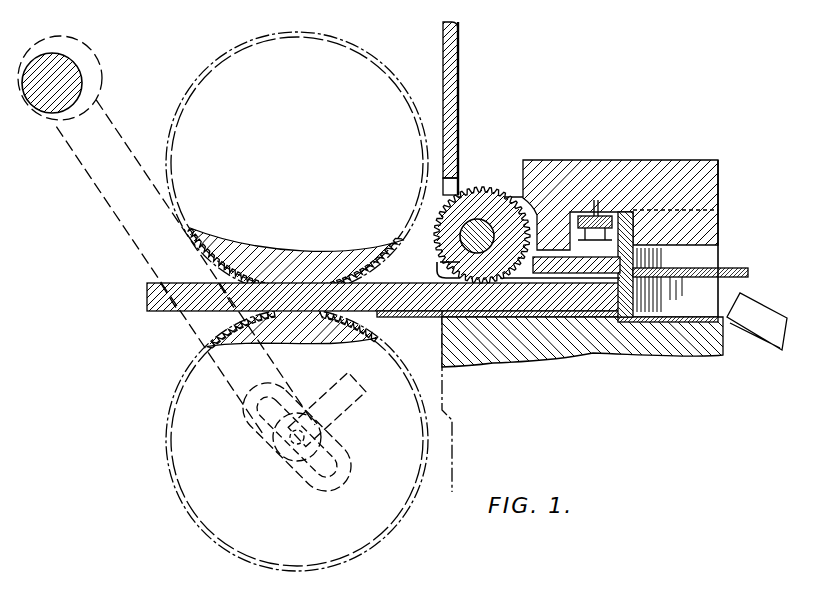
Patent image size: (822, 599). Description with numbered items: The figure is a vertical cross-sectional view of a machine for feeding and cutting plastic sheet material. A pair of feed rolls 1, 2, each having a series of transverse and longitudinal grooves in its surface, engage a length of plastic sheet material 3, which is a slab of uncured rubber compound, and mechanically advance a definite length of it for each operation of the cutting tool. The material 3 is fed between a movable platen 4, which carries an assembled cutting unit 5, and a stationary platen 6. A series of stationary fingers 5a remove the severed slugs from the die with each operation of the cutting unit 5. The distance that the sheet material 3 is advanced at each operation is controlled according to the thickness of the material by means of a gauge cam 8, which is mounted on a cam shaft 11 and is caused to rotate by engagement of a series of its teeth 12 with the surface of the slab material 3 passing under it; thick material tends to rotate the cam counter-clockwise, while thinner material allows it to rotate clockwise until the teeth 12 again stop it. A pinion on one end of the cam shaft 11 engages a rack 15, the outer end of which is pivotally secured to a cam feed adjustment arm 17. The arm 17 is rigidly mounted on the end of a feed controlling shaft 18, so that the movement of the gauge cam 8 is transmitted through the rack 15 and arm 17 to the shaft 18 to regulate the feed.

The feed roll 1 is at (373, 77).
The feed roll 2 is at (195, 357).
The plastic sheet material 3 is at (178, 283).
The movable platen 4 is at (713, 197).
The cutting unit 5 is at (718, 293).
The stationary fingers 5a is at (707, 267).
The stationary platen 6 is at (715, 350).
The gauge cam 8 is at (498, 192).
The cam shaft 11 is at (458, 221).
The teeth 12 is at (440, 264).
The rack 15 is at (305, 433).
The cam feed adjustment arm 17 is at (118, 223).
The feed controlling shaft 18 is at (68, 100).